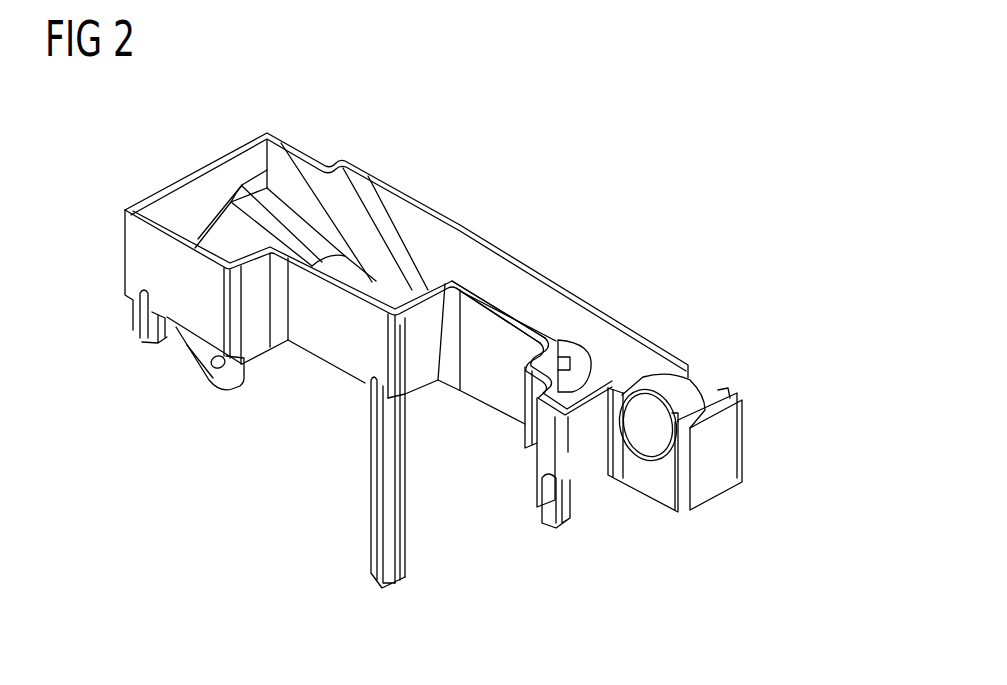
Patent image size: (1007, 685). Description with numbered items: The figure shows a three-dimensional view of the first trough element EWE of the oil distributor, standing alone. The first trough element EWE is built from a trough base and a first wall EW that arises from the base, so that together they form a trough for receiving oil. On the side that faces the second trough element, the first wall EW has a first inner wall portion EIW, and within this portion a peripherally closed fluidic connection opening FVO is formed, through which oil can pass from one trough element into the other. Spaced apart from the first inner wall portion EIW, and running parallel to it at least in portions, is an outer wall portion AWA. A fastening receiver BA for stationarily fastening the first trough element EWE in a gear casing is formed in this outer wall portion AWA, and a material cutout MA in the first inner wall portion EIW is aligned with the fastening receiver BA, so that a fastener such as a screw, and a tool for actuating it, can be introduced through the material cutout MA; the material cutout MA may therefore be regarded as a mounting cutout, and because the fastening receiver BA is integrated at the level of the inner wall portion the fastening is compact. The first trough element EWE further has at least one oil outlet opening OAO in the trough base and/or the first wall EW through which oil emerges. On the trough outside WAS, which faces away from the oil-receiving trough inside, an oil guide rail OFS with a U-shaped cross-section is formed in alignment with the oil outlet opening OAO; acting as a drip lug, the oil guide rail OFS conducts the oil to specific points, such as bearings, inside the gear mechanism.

The first wall EW is at (350, 286).
The first trough element EWE is at (480, 202).
The first inner wall portion EIW is at (553, 283).
The fluidic connection opening FVO is at (562, 357).
The material cutout MA is at (683, 398).
The fastening receiver BA is at (697, 388).
The oil outlet opening OAO is at (138, 316).
The oil guide rail OFS is at (165, 345).
The trough outside WAS is at (331, 327).
The outer wall portion AWA is at (527, 378).